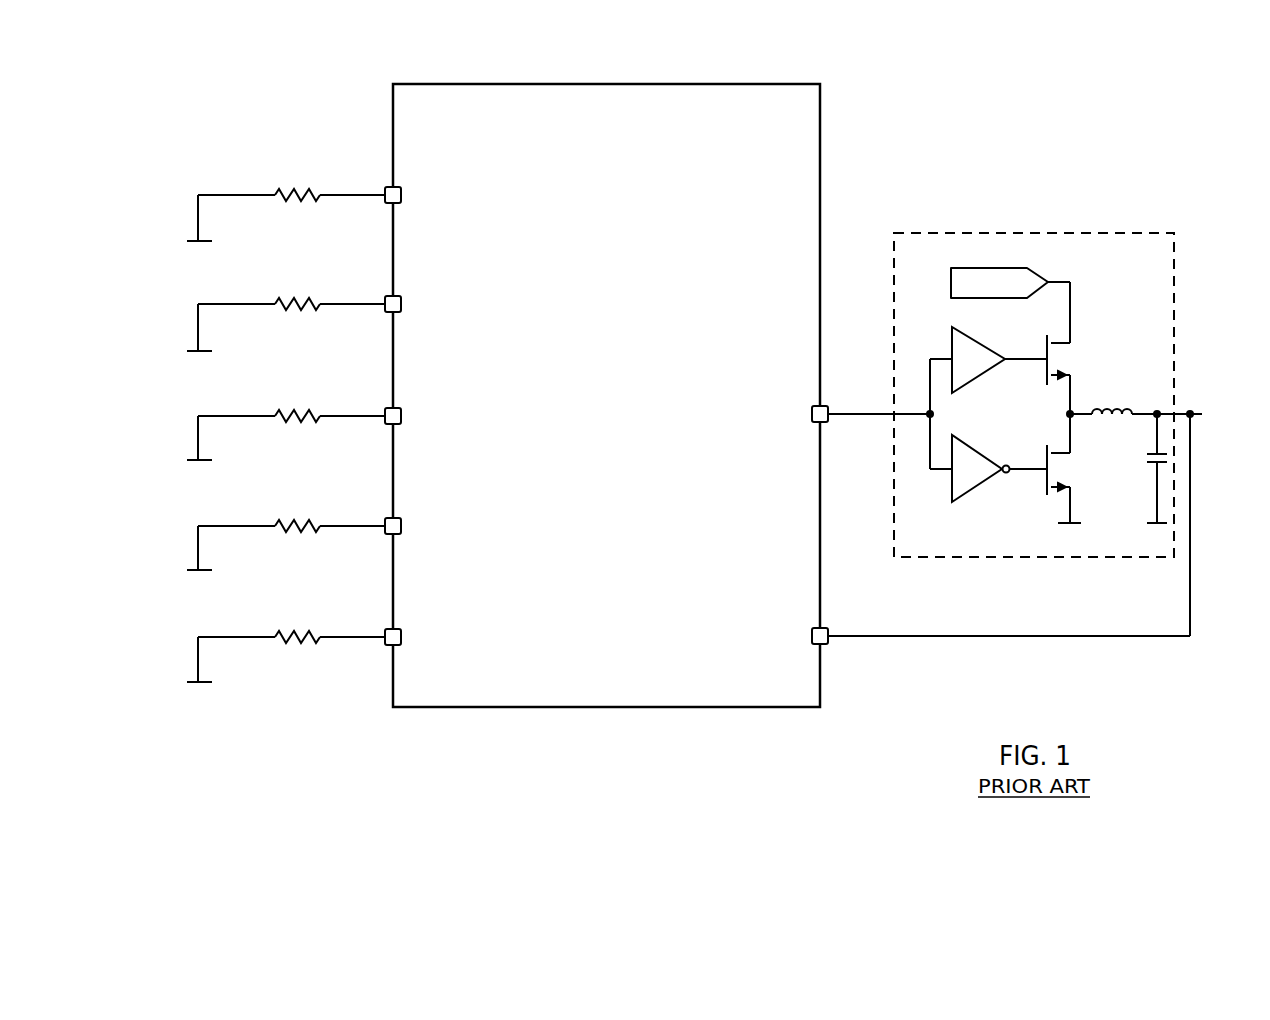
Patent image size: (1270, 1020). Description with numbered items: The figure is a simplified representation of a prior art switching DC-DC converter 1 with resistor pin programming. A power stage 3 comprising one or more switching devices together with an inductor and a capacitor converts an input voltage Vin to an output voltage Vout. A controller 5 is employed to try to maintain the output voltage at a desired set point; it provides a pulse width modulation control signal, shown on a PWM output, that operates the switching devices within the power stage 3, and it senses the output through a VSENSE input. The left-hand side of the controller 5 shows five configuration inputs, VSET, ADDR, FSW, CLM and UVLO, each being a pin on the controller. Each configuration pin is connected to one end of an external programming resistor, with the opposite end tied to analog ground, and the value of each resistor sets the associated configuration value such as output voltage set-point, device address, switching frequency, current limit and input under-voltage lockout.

The switching DC-DC converter 1 is at (246, 100).
The controller 5 is at (810, 168).
The power stage 3 is at (1060, 245).